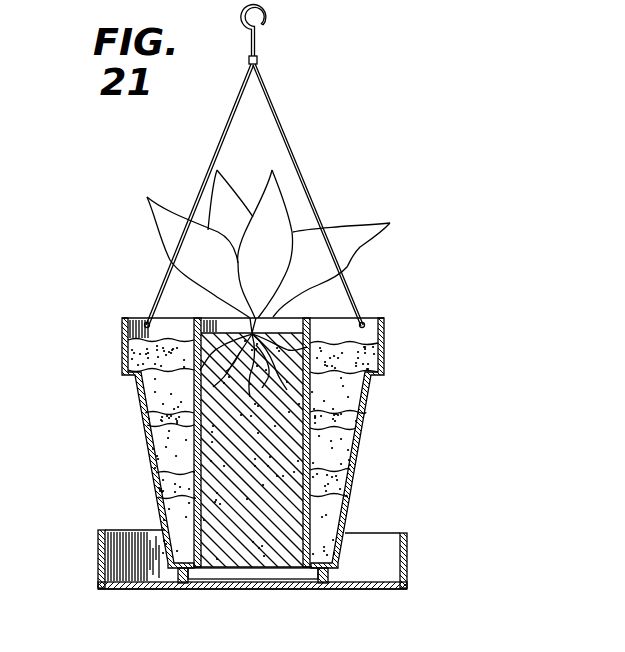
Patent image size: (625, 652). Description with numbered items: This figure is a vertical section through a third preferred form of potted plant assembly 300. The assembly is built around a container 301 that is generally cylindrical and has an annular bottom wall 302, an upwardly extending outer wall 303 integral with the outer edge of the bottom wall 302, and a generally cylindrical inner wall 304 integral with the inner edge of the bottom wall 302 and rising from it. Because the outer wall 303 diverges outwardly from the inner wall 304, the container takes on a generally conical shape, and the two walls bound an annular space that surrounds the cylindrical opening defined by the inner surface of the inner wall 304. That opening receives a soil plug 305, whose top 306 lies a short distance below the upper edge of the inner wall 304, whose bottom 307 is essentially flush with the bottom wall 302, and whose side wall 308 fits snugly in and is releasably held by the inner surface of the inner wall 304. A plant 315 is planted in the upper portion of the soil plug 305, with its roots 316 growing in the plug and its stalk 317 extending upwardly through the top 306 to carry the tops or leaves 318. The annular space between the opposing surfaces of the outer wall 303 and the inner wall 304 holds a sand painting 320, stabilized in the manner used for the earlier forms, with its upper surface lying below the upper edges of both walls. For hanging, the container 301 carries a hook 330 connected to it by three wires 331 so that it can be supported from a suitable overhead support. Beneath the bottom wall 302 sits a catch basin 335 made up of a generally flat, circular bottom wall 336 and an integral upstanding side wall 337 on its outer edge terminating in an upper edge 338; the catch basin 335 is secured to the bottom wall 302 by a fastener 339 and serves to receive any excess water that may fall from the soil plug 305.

The potted plant assembly 300 is at (178, 162).
The container 301 is at (143, 452).
The bottom wall 302 is at (346, 530).
The outer wall 303 is at (160, 489).
The inner wall 304 is at (318, 452).
The soil plug 305 is at (292, 412).
The top 306 is at (255, 333).
The bottom 307 is at (279, 571).
The side wall 308 is at (345, 471).
The plant 315 is at (275, 233).
The roots 316 is at (243, 378).
The stalk 317 is at (252, 333).
The leaves 318 is at (347, 230).
The sand painting 320 is at (173, 507).
The hook 330 is at (264, 14).
The wires 331 is at (275, 102).
The catch basin 335 is at (118, 590).
The bottom wall 336 is at (164, 590).
The side wall 337 is at (100, 552).
The upper edge 338 is at (404, 533).
The fastener 339 is at (190, 576).